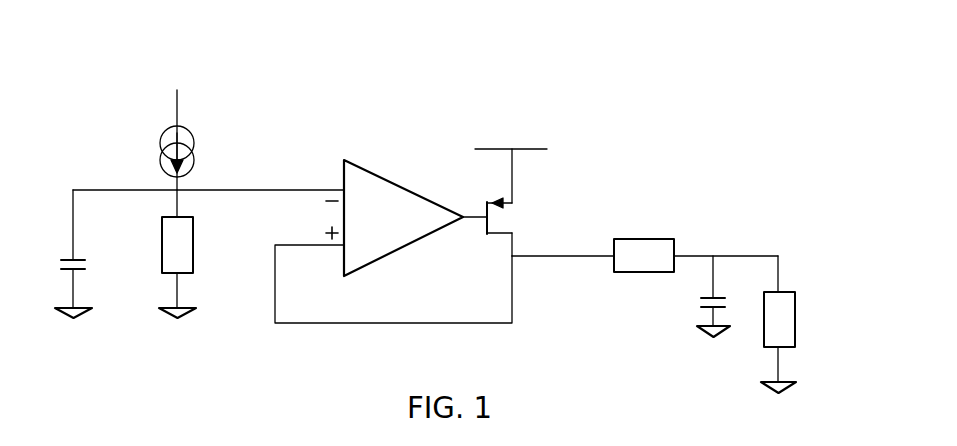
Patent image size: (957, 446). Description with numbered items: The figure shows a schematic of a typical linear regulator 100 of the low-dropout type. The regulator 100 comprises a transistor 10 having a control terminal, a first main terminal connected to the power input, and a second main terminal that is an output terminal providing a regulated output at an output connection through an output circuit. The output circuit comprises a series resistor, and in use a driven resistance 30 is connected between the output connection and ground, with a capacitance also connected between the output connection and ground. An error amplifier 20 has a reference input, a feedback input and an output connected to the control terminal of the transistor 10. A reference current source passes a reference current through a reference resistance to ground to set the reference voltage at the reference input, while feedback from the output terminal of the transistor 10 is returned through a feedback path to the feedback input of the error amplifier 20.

The linear regulator 100 is at (283, 54).
The error amplifier 20 is at (385, 176).
The transistor 10 is at (485, 206).
The load 30 is at (778, 254).